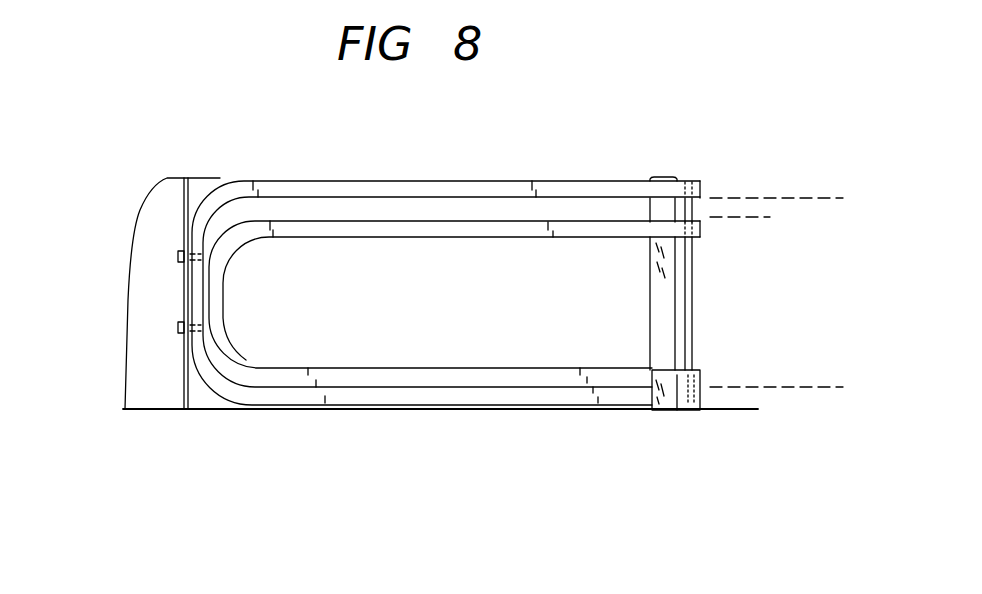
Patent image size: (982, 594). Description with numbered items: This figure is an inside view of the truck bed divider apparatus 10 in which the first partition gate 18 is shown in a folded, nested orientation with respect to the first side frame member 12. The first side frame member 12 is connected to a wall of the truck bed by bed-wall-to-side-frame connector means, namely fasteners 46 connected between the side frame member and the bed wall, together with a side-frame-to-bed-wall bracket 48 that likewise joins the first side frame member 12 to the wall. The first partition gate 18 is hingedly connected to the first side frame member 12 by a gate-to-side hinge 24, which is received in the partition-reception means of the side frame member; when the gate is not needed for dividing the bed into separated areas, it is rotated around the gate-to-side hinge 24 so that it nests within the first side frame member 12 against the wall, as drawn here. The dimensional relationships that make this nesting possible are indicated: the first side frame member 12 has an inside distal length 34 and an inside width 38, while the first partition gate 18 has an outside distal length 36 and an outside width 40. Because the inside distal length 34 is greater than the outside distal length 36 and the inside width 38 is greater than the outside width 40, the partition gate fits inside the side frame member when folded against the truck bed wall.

The truck bed divider apparatus 10 is at (692, 140).
The first side frame member 12 is at (375, 186).
The first partition gate 18 is at (373, 233).
The gate-to-side hinge 24 is at (693, 313).
The inside distal length 34 is at (683, 174).
The outside distal length 36 is at (209, 418).
The inside width 38 is at (828, 198).
The outside width 40 is at (763, 217).
The fastener 46 is at (178, 327).
The side-frame-to-bed-wall bracket 48 is at (654, 384).